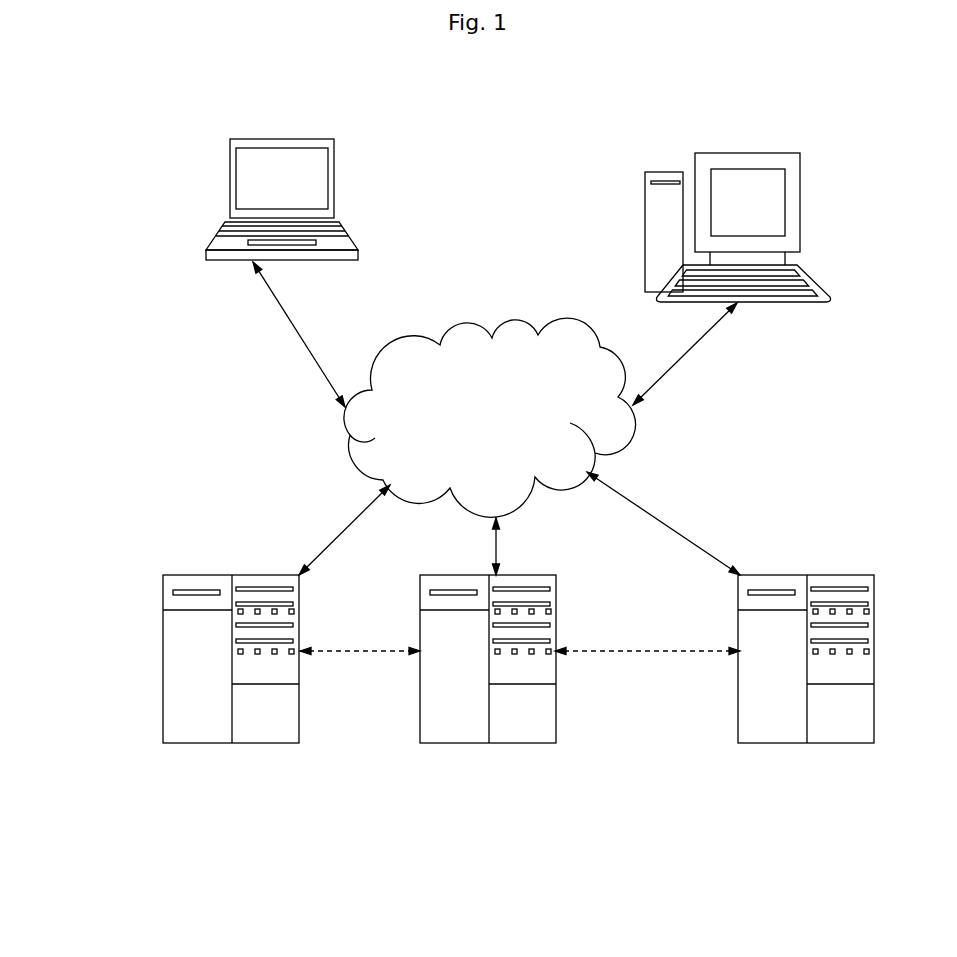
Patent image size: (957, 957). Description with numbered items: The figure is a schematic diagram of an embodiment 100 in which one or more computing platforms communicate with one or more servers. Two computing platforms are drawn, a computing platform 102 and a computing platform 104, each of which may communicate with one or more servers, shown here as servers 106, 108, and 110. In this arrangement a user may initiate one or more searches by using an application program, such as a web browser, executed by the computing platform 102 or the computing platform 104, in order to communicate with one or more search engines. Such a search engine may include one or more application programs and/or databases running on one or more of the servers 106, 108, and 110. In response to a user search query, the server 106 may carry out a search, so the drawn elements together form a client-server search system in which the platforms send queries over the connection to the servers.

The embodiment 100 is at (133, 863).
The computing platform 102 is at (267, 129).
The computing platform 104 is at (721, 143).
The server 106 is at (178, 571).
The server 108 is at (556, 610).
The server 110 is at (783, 566).